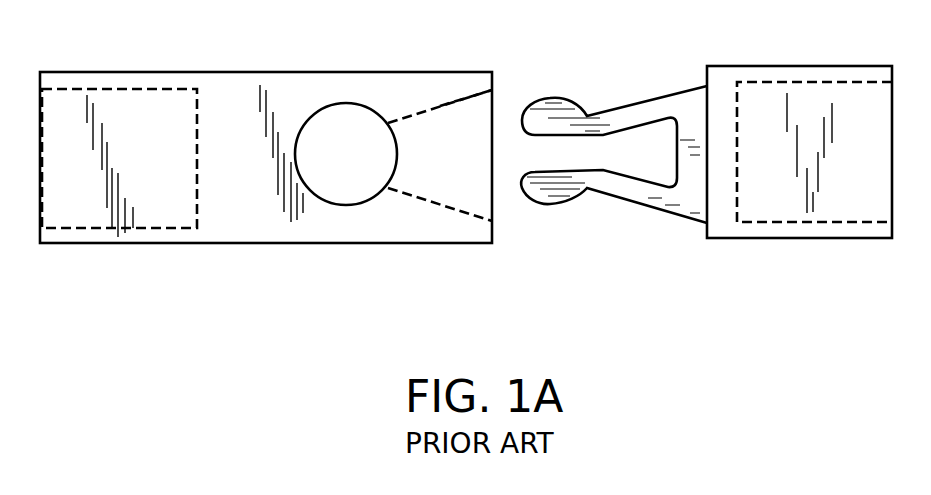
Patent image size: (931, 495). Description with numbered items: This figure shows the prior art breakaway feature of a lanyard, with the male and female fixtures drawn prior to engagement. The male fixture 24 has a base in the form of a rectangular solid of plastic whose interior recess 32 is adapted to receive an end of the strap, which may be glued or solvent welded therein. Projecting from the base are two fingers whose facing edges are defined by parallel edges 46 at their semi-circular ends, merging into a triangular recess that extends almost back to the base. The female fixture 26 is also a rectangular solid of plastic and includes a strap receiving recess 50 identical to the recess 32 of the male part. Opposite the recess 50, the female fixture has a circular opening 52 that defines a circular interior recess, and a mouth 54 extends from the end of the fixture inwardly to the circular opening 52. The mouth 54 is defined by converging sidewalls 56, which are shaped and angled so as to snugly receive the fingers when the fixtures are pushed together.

The male fixture 24 is at (797, 66).
The female fixture 26 is at (240, 82).
The interior recess 32 is at (862, 84).
The parallel edges 46 is at (568, 170).
The strap receiving recess 50 is at (128, 90).
The circular opening 52 is at (346, 103).
The mouth 54 is at (462, 100).
The converging sidewalls 56 is at (413, 117).